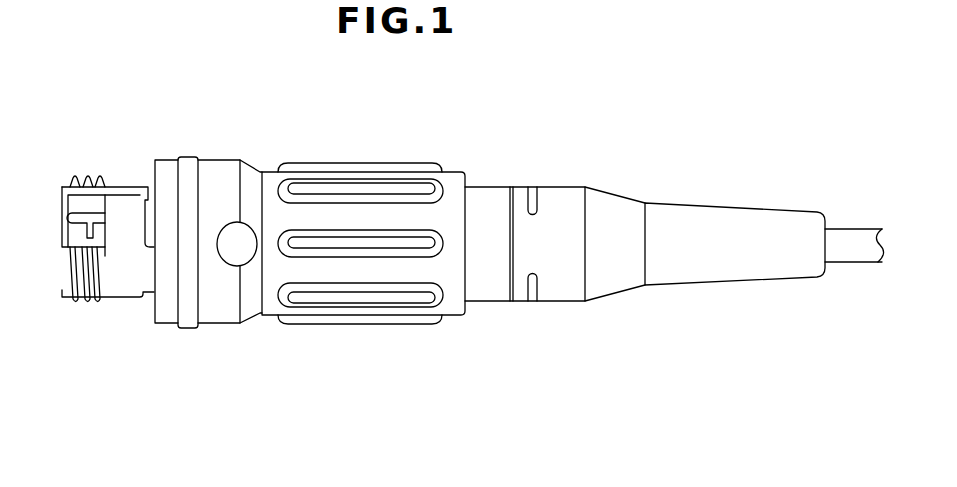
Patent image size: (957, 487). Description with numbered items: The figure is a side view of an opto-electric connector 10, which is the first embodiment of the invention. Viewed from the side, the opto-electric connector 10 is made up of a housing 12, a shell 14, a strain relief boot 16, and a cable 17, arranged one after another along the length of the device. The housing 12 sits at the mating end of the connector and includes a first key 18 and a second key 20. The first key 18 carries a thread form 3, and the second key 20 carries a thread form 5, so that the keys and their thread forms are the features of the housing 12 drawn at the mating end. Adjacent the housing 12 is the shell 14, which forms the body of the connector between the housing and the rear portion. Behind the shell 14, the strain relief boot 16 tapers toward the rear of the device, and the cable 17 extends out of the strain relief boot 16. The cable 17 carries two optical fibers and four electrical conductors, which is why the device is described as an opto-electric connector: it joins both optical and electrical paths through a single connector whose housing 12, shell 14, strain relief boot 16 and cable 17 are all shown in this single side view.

The opto-electric connector 10 is at (595, 128).
The first key 18 is at (66, 190).
The thread form 3 is at (88, 181).
The housing 12 is at (147, 213).
The shell 14 is at (224, 160).
The second key 20 is at (64, 292).
The thread form 5 is at (85, 300).
The strain relief boot 16 is at (691, 203).
The cable 17 is at (858, 228).